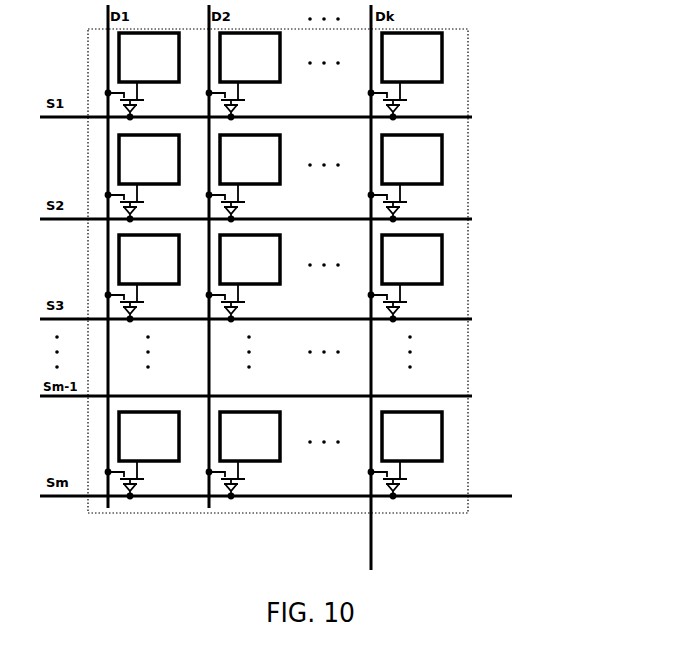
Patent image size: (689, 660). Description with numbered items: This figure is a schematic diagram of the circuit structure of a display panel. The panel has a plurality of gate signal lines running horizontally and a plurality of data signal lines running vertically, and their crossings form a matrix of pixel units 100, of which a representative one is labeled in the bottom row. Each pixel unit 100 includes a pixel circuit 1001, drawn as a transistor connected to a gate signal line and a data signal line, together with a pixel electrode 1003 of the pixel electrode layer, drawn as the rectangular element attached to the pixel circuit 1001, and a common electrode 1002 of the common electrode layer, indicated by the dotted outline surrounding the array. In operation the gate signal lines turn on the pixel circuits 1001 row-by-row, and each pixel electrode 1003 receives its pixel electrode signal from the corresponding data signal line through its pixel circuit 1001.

The pixel unit 100 is at (175, 477).
The pixel circuit 1001 is at (240, 473).
The common electrode 1002 is at (460, 205).
The pixel electrode 1003 is at (275, 455).